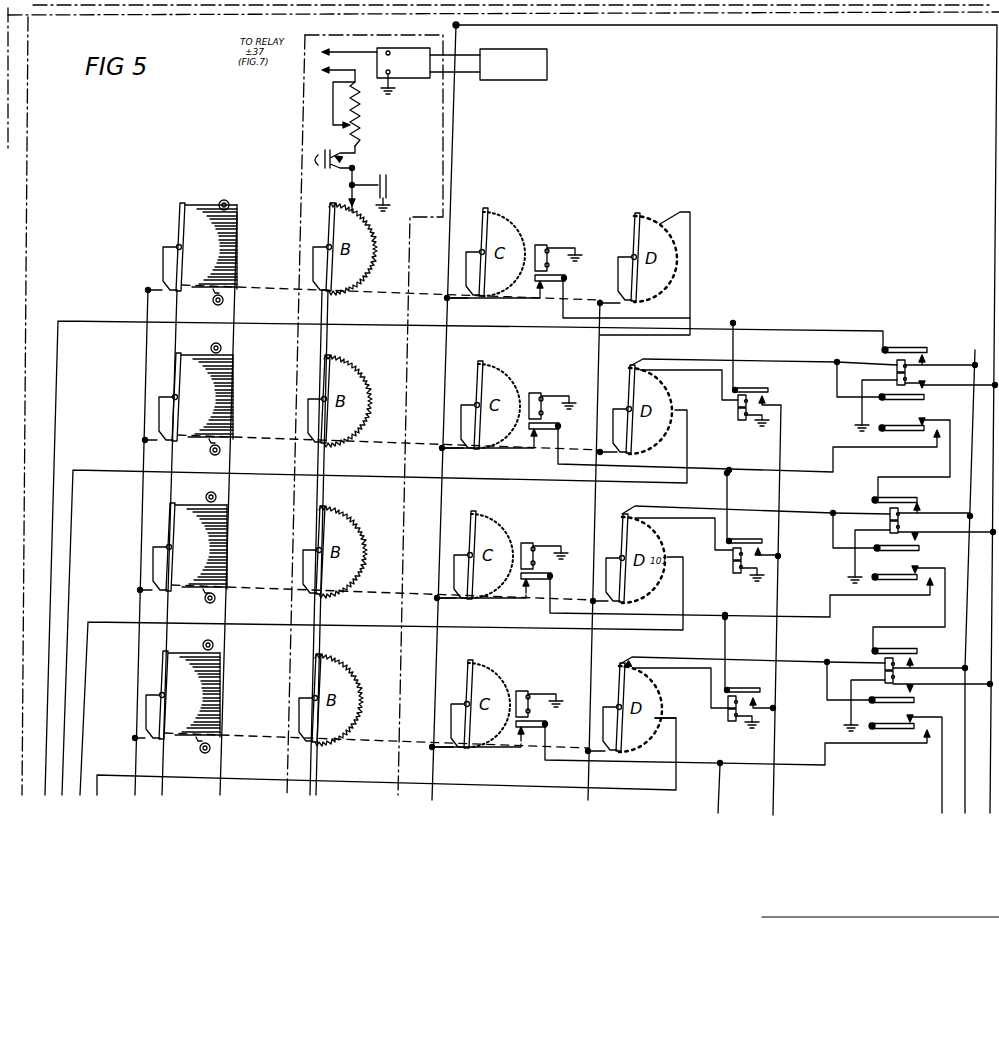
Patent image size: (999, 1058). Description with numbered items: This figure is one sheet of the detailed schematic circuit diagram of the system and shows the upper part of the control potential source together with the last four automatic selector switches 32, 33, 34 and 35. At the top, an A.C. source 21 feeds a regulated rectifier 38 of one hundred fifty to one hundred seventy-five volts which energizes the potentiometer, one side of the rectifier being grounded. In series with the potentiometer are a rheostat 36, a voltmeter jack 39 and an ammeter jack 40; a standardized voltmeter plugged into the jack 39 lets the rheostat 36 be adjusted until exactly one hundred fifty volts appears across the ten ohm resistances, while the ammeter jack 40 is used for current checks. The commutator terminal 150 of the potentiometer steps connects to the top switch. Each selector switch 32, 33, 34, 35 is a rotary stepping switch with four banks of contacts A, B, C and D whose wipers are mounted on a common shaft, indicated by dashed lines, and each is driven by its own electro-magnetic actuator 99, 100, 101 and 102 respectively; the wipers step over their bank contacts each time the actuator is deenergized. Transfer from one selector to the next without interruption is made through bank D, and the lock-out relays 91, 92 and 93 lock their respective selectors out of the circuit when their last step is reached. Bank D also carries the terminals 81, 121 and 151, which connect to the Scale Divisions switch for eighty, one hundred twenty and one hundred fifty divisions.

The A.C. source 21 is at (547, 76).
The rheostat 36 is at (356, 130).
The regulated rectifier 38 is at (415, 78).
The jack 39 is at (381, 193).
The ammeter jack 40 is at (332, 173).
The commutator terminal 150 is at (231, 252).
The selector switch 35 is at (176, 248).
The selector switch 34 is at (170, 398).
The selector switch 33 is at (166, 548).
The selector switch 32 is at (161, 696).
The electro-magnetic actuator 102 is at (548, 235).
The electro-magnetic actuator 101 is at (541, 383).
The electro-magnetic actuator 100 is at (533, 531).
The electro-magnetic actuator 99 is at (530, 679).
The terminal 151 is at (645, 273).
The terminal 121 is at (663, 413).
The terminal 81 is at (660, 721).
The relay 93 is at (916, 507).
The relay 92 is at (913, 573).
The relay 91 is at (909, 730).